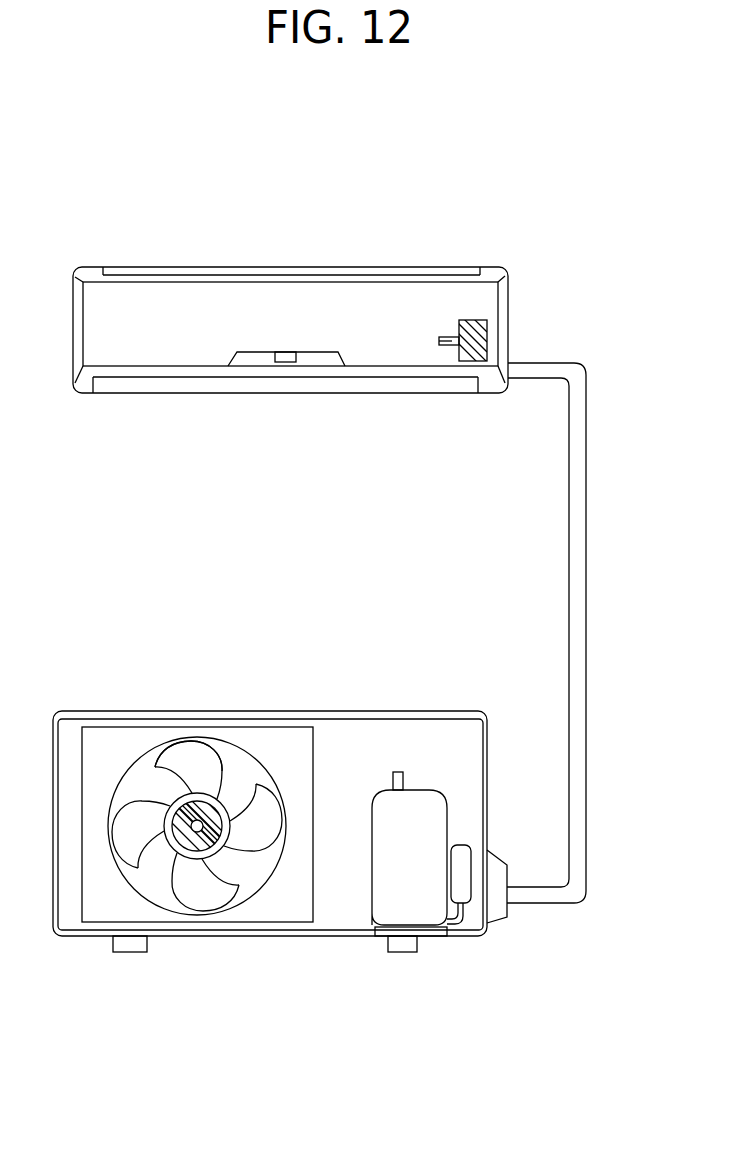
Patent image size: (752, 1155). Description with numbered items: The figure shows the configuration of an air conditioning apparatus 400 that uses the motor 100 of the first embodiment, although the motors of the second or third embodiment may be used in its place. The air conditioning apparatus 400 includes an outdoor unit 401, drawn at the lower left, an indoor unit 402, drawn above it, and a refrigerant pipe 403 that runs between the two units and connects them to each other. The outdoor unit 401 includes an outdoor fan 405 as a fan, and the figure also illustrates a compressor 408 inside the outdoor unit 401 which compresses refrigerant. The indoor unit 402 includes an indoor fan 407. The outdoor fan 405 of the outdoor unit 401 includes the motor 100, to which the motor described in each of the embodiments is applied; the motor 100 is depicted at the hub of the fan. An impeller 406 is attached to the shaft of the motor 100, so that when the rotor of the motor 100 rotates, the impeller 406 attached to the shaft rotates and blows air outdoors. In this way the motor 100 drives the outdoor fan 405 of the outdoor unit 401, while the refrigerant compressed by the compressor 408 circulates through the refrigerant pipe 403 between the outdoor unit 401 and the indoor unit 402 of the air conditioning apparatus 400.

The air conditioning apparatus 400 is at (585, 205).
The outdoor unit 401 is at (322, 710).
The indoor unit 402 is at (362, 268).
The refrigerant pipe 403 is at (569, 572).
The outdoor fan 405 is at (236, 744).
The impeller 406 is at (188, 752).
The indoor fan 407 is at (312, 360).
The compressor 408 is at (372, 893).
The motor 100 is at (190, 825).